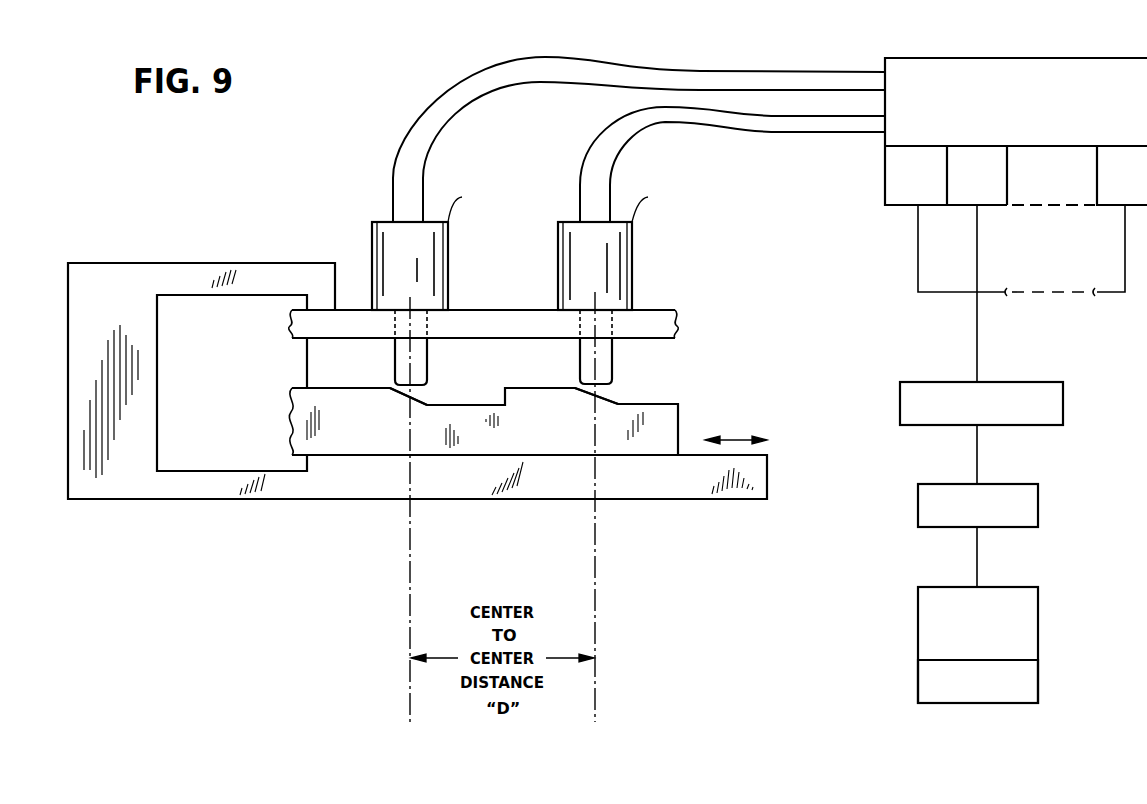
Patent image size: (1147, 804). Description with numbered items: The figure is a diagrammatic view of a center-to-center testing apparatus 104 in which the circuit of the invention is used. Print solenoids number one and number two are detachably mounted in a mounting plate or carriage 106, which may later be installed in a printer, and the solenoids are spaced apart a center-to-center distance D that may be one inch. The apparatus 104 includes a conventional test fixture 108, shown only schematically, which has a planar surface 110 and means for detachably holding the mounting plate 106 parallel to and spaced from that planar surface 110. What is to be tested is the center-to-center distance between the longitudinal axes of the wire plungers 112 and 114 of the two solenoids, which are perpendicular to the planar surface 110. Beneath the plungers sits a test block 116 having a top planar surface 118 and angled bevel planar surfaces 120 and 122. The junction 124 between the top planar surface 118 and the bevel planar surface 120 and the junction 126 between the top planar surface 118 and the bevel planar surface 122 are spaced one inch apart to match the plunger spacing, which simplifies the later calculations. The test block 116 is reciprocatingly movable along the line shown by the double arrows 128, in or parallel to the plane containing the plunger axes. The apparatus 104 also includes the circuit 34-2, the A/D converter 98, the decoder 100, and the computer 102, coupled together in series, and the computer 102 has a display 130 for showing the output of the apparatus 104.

The apparatus 104 is at (352, 200).
The test fixture 108 is at (112, 268).
The mounting plate 106 is at (675, 310).
The planar surface 110 is at (667, 490).
The wire plunger 112 is at (427, 362).
The wire plunger 114 is at (580, 362).
The test block 116 is at (302, 417).
The top planar surface 118 is at (348, 388).
The bevel planar surface 120 is at (420, 400).
The bevel planar surface 122 is at (605, 397).
The junction 124 is at (390, 392).
The junction 126 is at (575, 390).
The double arrows 128 is at (735, 440).
The circuit 34-2 is at (1016, 220).
The A/D converter 98 is at (922, 382).
The decoder 100 is at (918, 505).
The computer 102 is at (918, 607).
The display 130 is at (918, 683).